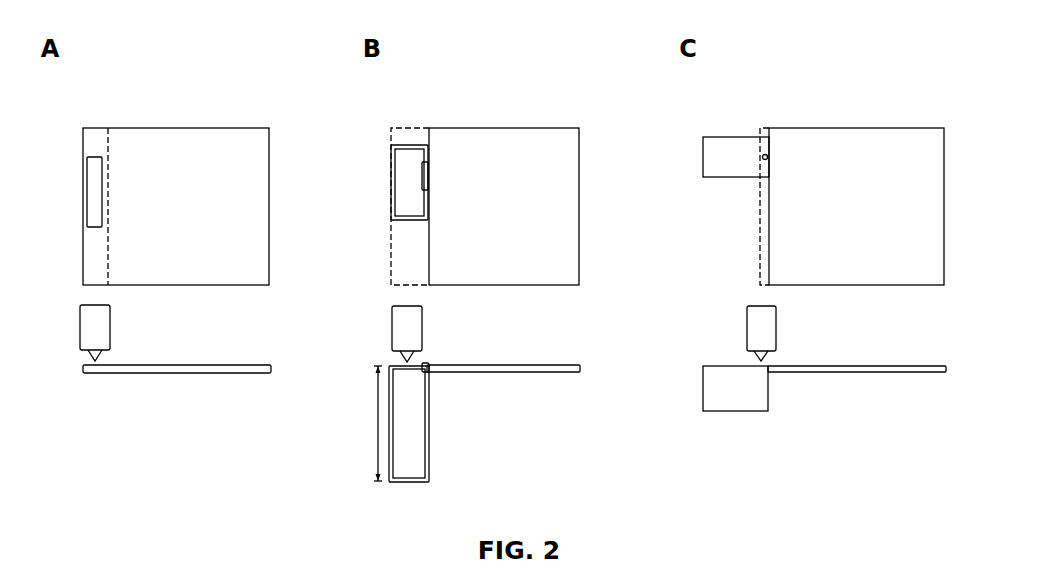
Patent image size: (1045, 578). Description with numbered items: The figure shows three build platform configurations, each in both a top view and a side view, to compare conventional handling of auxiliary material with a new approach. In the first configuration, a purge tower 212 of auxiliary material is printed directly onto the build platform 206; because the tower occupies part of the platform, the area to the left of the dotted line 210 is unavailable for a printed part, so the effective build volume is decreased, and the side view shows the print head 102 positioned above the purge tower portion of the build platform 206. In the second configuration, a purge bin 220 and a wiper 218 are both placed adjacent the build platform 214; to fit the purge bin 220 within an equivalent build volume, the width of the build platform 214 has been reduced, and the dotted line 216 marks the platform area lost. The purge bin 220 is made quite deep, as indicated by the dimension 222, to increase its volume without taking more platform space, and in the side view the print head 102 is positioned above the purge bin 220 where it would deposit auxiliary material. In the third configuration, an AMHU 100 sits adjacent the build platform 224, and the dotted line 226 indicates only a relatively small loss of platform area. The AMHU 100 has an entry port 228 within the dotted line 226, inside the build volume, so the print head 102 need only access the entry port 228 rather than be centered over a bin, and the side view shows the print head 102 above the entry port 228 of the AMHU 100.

In FIG. 2C, the AMHU 100 is at (708, 157).
In FIG. 2A, the print head 102 is at (72, 332).
In FIG. 2B, the print head 102 is at (377, 331).
In FIG. 2C, the print head 102 is at (731, 317).
In FIG. 2A, the build platform 206 is at (254, 133).
In FIG. 2A, the dotted line 210 is at (108, 141).
In FIG. 2A, the purge tower 212 is at (93, 202).
In FIG. 2B, the build platform 214 is at (572, 132).
In FIG. 2B, the dotted line 216 is at (402, 126).
In FIG. 2B, the wiper 218 is at (422, 176).
In FIG. 2B, the purge bin 220 is at (403, 220).
In FIG. 2B, the dimension 222 is at (377, 415).
In FIG. 2C, the build platform 224 is at (932, 132).
In FIG. 2C, the dotted line 226 is at (763, 127).
In FIG. 2C, the entry port 228 is at (762, 160).